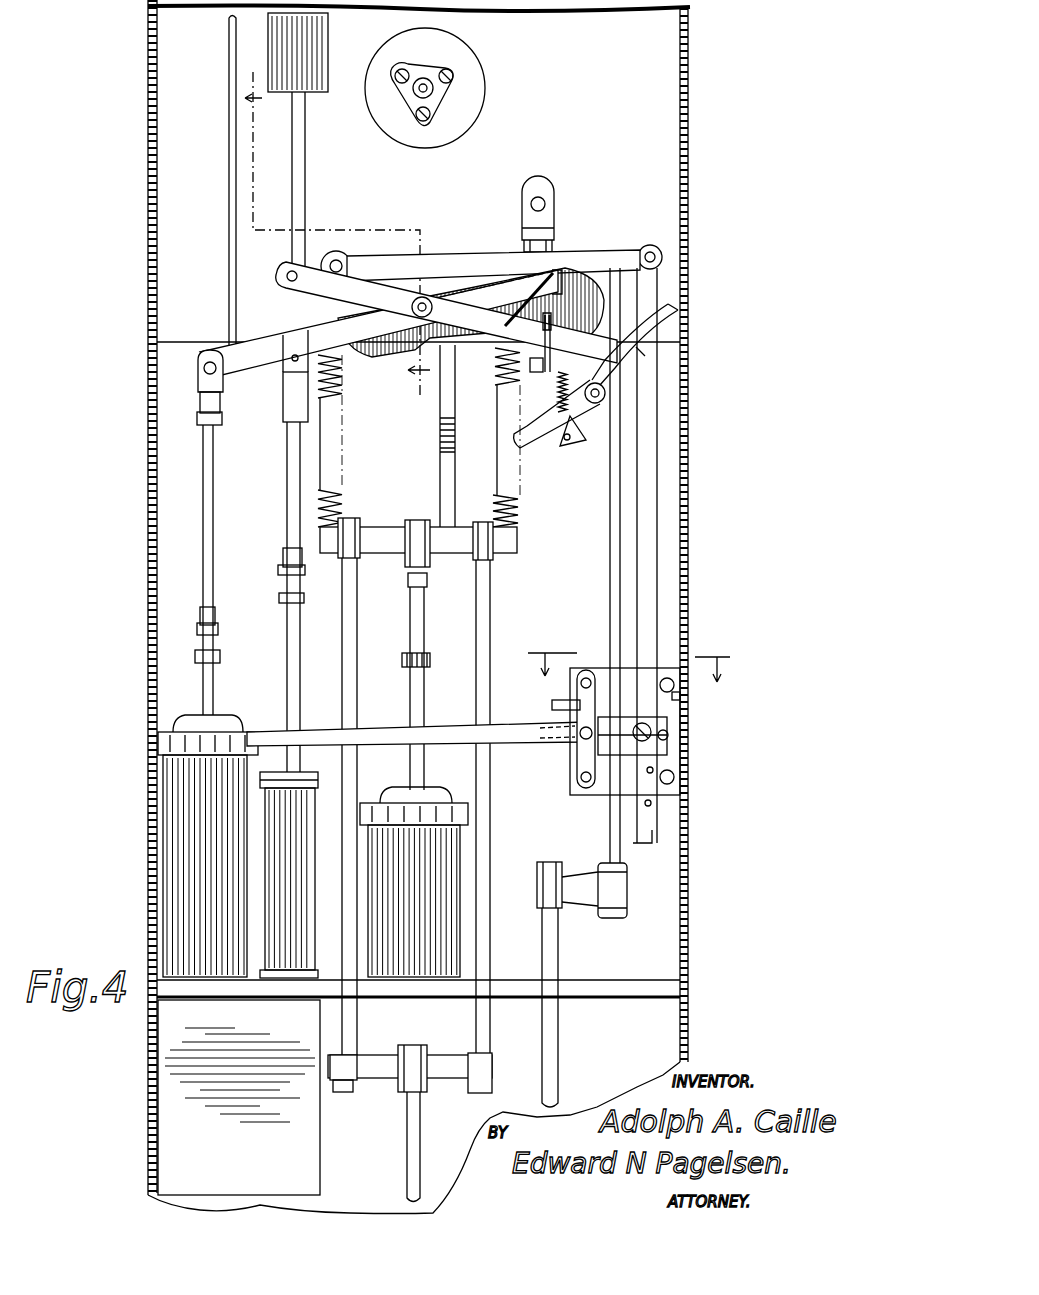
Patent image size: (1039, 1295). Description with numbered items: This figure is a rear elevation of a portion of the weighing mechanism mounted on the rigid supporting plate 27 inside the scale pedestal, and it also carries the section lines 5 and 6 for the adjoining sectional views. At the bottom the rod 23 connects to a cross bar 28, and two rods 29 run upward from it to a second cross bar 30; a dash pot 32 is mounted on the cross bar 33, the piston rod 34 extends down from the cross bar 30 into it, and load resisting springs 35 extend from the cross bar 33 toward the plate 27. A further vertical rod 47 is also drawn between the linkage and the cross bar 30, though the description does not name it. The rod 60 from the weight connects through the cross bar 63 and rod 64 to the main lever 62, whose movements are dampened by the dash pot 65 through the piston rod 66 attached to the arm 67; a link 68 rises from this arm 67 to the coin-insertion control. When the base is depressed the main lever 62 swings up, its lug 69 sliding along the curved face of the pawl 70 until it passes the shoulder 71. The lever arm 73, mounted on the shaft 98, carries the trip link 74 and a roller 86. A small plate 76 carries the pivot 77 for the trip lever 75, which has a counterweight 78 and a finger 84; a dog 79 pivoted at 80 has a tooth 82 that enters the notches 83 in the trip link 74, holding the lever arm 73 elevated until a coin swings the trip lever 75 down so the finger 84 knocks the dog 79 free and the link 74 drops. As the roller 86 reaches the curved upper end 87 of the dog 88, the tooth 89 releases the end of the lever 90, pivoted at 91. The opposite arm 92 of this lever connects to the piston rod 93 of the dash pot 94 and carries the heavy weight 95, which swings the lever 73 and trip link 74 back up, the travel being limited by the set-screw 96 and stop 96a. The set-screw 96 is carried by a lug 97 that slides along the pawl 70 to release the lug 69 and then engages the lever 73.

The heavy weight 95 is at (310, 46).
The link 68 is at (228, 228).
The section line 6— 6 is at (337, 239).
The supporting plate 27 is at (614, 186).
The stop 96a is at (524, 232).
The lug 69 is at (547, 270).
The roller 86 is at (651, 246).
The shaft 98 is at (343, 260).
The lever arm 73 is at (443, 262).
The main lever 62 is at (478, 285).
The arm of lever 90 92 is at (446, 312).
The pivot 91 is at (434, 310).
The lever 90 is at (498, 303).
The lug 97 is at (516, 333).
The shoulder 71 is at (529, 299).
The pawl 70 is at (570, 302).
The curved upper end 87 is at (660, 333).
The tooth 89 is at (642, 353).
The arm 67 is at (257, 373).
The set-screw 96 is at (537, 374).
The dog 88 is at (580, 416).
The trip link 74 is at (652, 441).
The rod 47 is at (440, 453).
The piston rod 93 is at (287, 478).
The load resisting springs 35 is at (519, 513).
The second cross bar 30 is at (418, 552).
The rod 64 is at (610, 540).
The piston rod 66 is at (216, 673).
The piston rod 34 is at (425, 688).
The section line 5— 5 is at (632, 654).
The dog 79 is at (561, 705).
The trip lever 75 is at (503, 732).
The tooth 82 is at (690, 697).
The counterweight 78 is at (677, 722).
The finger 84 is at (629, 732).
The pivot 80 is at (668, 735).
The pivot 77 is at (578, 742).
The small plate 76 is at (672, 765).
The notches 83 is at (646, 803).
The dash pot 65 is at (208, 846).
The dash pot 94 is at (297, 843).
The dash pot 32 is at (414, 882).
The cross bar 63 is at (576, 884).
The rod 60 is at (560, 957).
The cross bar 33 is at (418, 989).
The rods 29 is at (476, 1017).
The cross bar 28 is at (378, 1063).
The rod 23 is at (407, 1150).